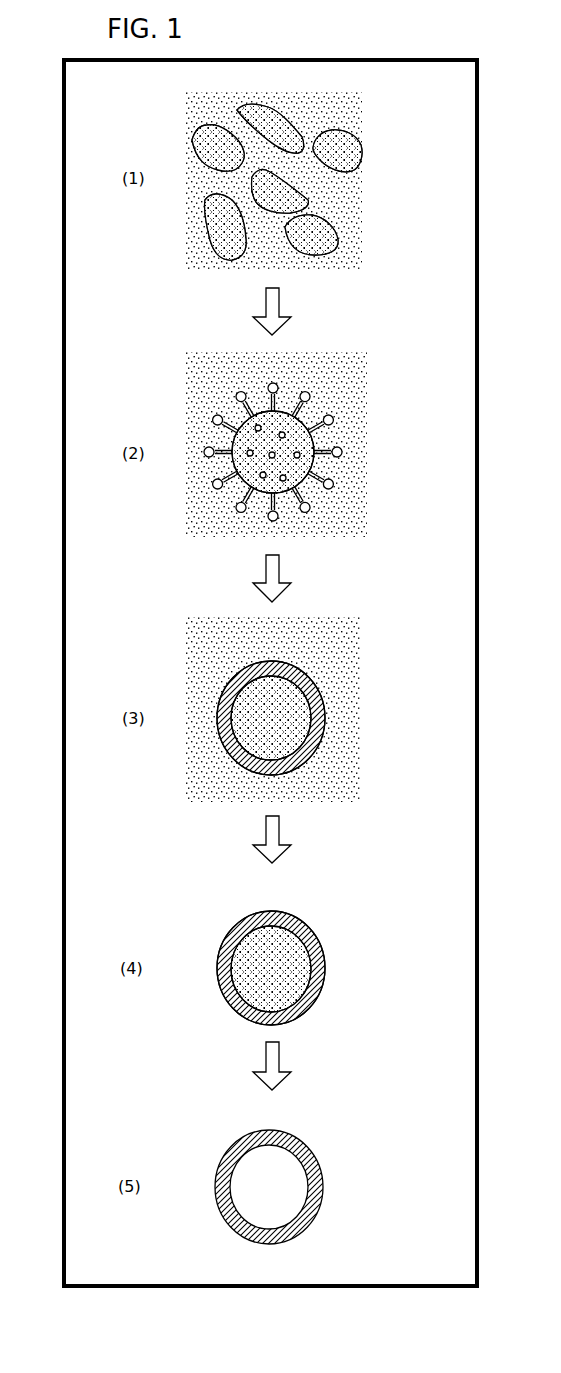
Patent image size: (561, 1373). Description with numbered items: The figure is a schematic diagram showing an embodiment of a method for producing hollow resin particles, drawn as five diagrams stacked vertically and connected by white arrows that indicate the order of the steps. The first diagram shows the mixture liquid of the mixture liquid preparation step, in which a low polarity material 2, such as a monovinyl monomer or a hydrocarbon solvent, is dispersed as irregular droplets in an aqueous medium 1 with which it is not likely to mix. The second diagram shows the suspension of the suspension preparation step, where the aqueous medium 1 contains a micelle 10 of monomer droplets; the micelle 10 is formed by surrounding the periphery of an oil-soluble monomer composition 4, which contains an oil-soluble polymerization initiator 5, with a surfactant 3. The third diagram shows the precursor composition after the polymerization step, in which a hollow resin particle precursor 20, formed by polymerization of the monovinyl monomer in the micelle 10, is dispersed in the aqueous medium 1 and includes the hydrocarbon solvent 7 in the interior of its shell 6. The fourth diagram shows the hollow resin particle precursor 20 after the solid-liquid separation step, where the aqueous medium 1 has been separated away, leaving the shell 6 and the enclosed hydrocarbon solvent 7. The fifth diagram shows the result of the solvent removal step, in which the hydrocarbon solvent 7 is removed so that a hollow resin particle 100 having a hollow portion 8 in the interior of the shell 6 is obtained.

The aqueous medium 1 is at (197, 108).
The low polarity material 2 is at (268, 105).
The surfactant 3 is at (263, 411).
The oil-soluble monomer composition 4 is at (292, 410).
The oil-soluble polymerization initiator 5 is at (247, 505).
The micelle 10 is at (274, 440).
The hollow resin particle precursor 20 is at (284, 817).
The shell 6 is at (322, 684).
The hydrocarbon solvent 7 is at (318, 736).
The hollow portion 8 is at (316, 1200).
The hollow resin particle 100 is at (282, 1160).